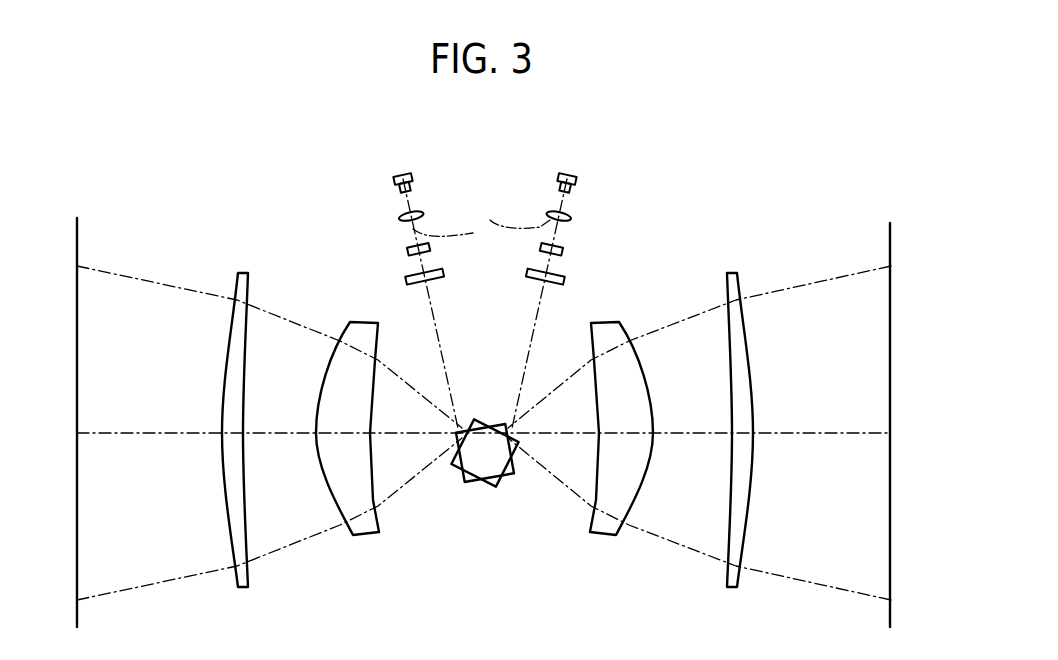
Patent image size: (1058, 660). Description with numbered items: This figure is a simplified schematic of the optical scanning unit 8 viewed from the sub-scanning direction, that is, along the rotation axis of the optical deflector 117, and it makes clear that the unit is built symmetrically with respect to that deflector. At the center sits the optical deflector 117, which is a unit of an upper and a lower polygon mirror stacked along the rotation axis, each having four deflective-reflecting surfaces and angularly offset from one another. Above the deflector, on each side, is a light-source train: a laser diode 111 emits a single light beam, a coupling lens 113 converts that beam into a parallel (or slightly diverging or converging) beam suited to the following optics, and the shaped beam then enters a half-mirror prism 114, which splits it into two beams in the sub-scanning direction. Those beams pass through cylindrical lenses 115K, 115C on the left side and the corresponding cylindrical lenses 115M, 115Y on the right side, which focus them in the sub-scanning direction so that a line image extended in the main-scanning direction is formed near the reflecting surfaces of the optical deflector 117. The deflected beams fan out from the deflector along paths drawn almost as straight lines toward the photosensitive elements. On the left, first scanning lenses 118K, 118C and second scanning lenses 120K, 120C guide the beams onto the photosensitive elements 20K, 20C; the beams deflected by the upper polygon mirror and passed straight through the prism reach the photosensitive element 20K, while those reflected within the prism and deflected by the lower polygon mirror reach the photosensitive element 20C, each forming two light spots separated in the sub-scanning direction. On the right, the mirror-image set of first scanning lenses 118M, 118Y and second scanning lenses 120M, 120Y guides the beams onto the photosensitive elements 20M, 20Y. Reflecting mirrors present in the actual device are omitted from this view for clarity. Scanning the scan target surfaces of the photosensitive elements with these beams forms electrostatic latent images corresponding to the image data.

The optical scanning unit 8 is at (596, 123).
The laser diode 111 is at (396, 175).
The coupling lens 113 is at (399, 217).
The half-mirror prism 114 is at (407, 252).
The cylindrical lens 115K is at (354, 281).
The cylindrical lens 115C is at (407, 280).
The cylindrical lens 115M is at (611, 288).
The cylindrical lens 115Y is at (564, 280).
The optical deflector 117 is at (479, 506).
The first scanning lens 118K is at (356, 457).
The first scanning lens 118C is at (363, 537).
The first scanning lens 118M is at (619, 456).
The first scanning lens 118Y is at (605, 537).
The second scanning lens 120K is at (180, 430).
The second scanning lens 120C is at (226, 364).
The second scanning lens 120M is at (794, 430).
The second scanning lens 120Y is at (749, 380).
The photosensitive element 20K is at (123, 422).
The photosensitive element 20C is at (78, 249).
The photosensitive element 20M is at (842, 425).
The photosensitive element 20Y is at (889, 249).